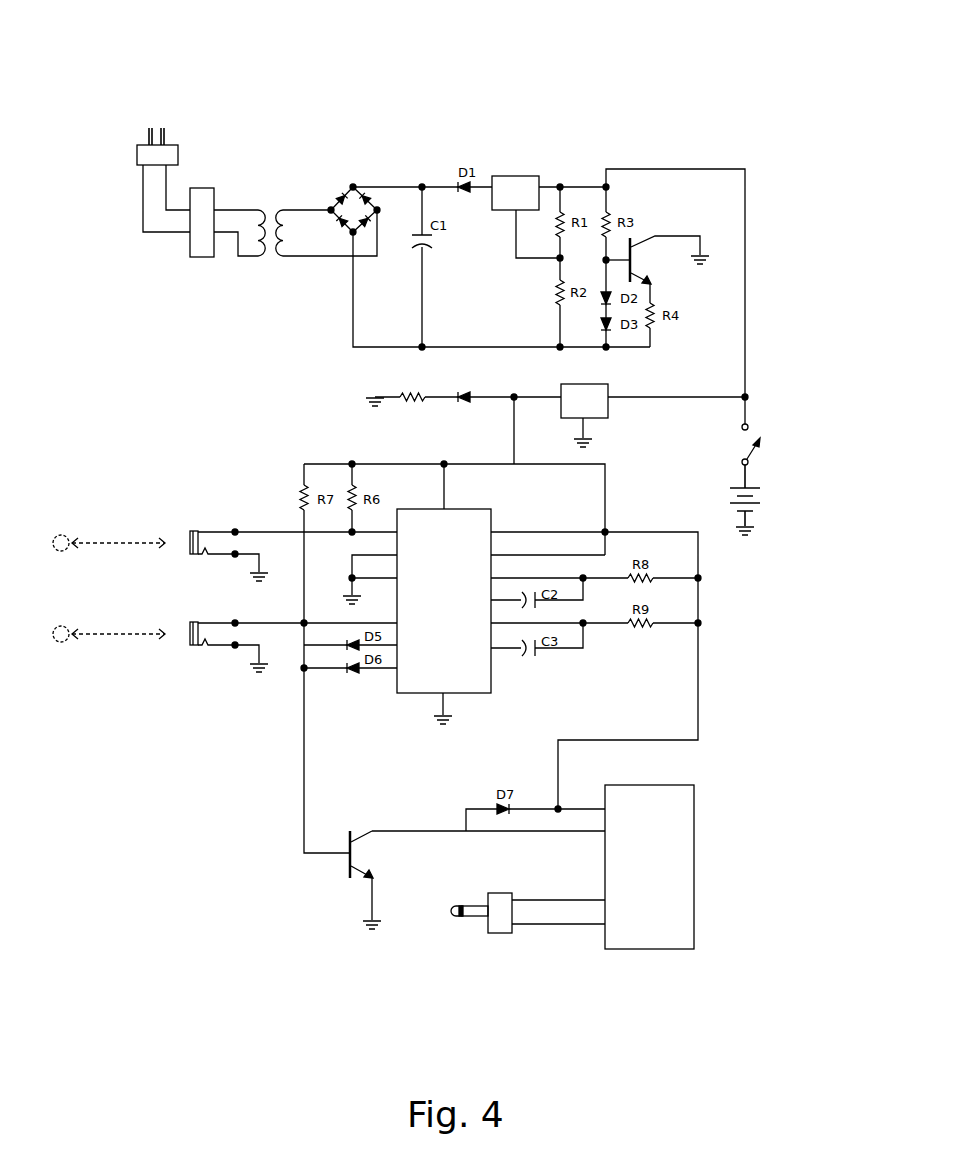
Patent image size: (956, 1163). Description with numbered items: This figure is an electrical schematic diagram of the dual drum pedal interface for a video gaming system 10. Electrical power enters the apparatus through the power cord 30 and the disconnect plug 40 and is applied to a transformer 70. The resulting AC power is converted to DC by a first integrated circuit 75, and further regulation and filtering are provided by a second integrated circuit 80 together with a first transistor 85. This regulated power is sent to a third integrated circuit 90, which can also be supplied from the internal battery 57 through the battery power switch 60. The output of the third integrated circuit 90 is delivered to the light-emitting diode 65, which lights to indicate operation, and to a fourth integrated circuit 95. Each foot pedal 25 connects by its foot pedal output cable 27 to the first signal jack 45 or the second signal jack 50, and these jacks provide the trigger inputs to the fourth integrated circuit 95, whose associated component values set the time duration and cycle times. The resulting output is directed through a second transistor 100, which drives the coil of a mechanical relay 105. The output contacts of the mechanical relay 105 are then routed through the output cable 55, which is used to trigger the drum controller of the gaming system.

The dual drum pedal interface for a video gaming system 10 is at (120, 100).
The foot pedal 25 is at (53, 627).
The foot pedal output cable 27 is at (120, 633).
The power cord (P1) 30 is at (187, 157).
The disconnect plug (P2) 40 is at (203, 252).
The first signal jack (J1) 45 is at (170, 538).
The second signal jack (J2) 50 is at (170, 646).
The output cable (P3) 55 is at (492, 938).
The internal battery (B1) 57 is at (785, 502).
The battery power switch (S1) 60 is at (785, 447).
The light-emitting diode (LED) (D4) 65 is at (483, 387).
The transformer (T1) 70 is at (283, 183).
The first integrated circuit (U1) 75 is at (384, 173).
The second integrated circuit (U2) 80 is at (540, 172).
The first transistor (Q1) 85 is at (640, 233).
The third integrated circuit (U3) 90 is at (611, 388).
The fourth integrated circuit (U4) 95 is at (491, 515).
The second transistor (Q2) 100 is at (345, 880).
The mechanical relay (K1) 105 is at (695, 858).